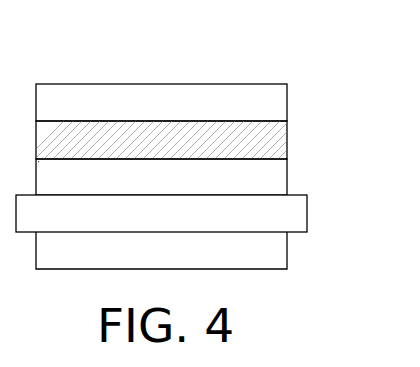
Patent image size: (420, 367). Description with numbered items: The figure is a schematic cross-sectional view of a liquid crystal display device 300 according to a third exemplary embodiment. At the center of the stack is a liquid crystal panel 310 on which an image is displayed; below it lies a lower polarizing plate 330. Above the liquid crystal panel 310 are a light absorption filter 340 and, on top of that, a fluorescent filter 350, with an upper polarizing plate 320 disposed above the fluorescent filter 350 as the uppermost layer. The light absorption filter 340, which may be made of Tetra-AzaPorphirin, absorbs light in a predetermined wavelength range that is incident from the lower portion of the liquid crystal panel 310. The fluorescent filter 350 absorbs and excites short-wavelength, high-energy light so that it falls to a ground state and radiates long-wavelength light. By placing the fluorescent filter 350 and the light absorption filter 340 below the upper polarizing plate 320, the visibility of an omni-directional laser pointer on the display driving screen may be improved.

The liquid crystal display device 300 is at (299, 72).
The liquid crystal panel 310 is at (303, 214).
The upper polarizing plate 320 is at (283, 102).
The lower polarizing plate 330 is at (283, 252).
The light absorption filter 340 is at (283, 177).
The fluorescent filter 350 is at (283, 140).